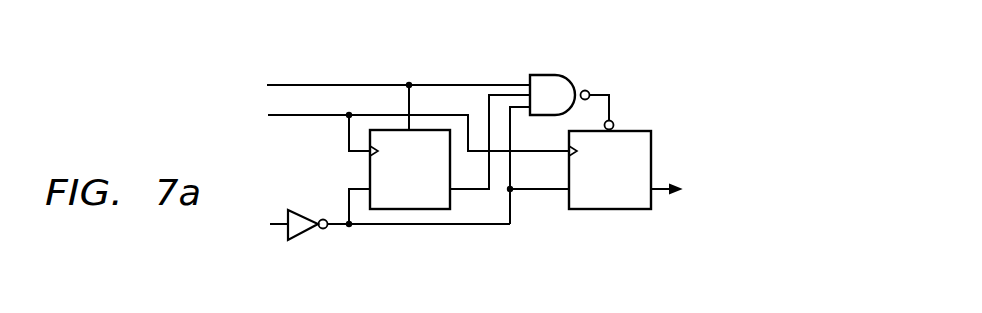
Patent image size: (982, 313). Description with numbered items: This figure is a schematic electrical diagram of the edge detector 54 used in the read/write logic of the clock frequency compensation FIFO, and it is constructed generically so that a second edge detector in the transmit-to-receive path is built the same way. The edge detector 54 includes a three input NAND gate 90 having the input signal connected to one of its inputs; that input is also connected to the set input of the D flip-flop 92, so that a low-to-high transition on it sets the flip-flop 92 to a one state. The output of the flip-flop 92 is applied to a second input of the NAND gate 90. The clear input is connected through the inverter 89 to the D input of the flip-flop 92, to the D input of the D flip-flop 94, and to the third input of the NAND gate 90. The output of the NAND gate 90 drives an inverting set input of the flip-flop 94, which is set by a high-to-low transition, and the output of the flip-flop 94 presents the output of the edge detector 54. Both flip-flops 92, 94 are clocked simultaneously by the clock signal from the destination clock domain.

The edge detector 54 is at (722, 132).
The inverter 89 is at (306, 239).
The three input NAND gate 90 is at (553, 75).
The D flip-flop 92 is at (370, 170).
The D flip-flop 94 is at (611, 209).